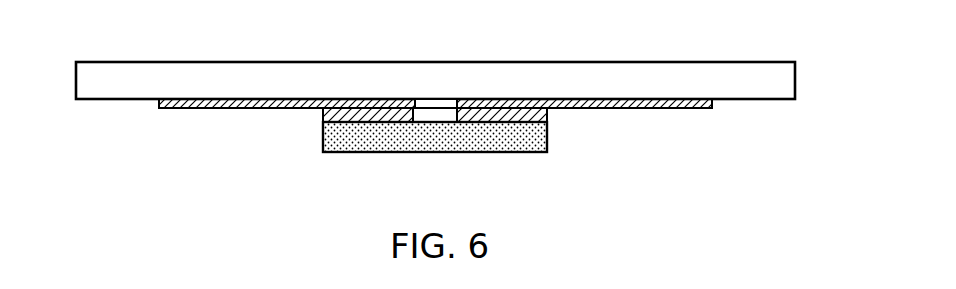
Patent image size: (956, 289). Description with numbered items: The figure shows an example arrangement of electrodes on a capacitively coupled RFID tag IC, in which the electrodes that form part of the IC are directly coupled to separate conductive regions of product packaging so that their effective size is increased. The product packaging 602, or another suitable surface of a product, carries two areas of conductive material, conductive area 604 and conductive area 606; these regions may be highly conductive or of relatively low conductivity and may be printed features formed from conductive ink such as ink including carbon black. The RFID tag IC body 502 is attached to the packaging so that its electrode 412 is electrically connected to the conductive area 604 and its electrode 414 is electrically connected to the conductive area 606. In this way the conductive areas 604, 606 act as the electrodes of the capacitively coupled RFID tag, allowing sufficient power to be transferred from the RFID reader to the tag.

The product packaging 602 is at (270, 62).
The conductive area 604 is at (380, 99).
The conductive area 606 is at (502, 99).
The electrode 412 is at (370, 122).
The electrode 414 is at (487, 122).
The piezoelectric body 502 is at (532, 150).